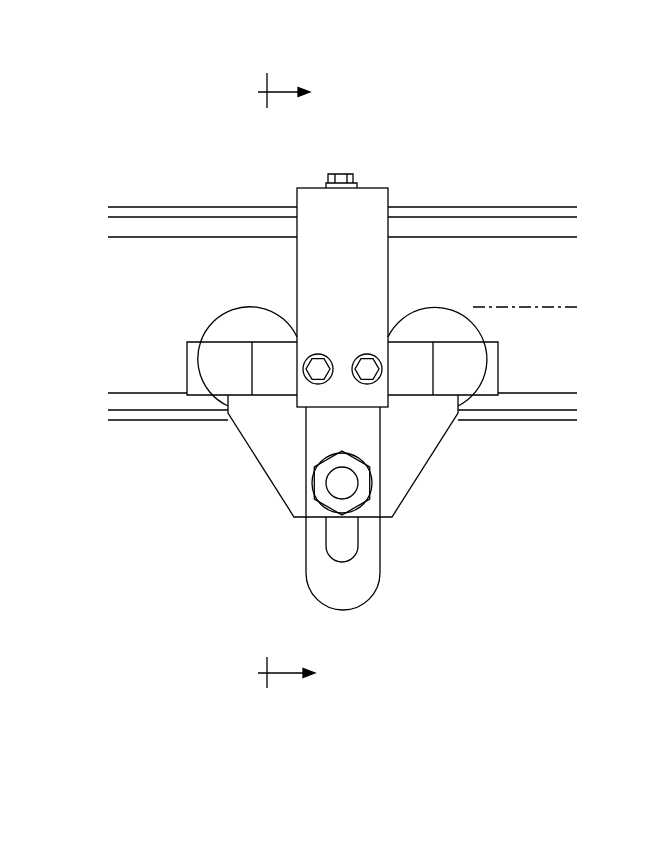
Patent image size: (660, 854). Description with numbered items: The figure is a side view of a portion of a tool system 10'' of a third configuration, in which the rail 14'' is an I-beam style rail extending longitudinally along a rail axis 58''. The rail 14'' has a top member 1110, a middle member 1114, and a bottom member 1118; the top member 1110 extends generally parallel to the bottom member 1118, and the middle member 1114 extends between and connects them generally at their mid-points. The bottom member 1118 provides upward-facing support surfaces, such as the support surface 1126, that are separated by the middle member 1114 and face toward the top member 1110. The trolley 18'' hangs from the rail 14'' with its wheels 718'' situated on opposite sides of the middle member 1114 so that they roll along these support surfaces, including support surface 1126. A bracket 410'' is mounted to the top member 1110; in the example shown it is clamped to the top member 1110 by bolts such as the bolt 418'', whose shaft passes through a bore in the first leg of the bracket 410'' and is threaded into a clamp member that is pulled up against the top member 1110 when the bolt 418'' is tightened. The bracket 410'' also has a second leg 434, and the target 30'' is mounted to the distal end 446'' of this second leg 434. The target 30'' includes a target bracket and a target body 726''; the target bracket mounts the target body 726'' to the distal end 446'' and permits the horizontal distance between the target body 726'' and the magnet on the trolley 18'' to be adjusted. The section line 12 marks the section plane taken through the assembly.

The tool system 10'' is at (350, 409).
The section line 12 is at (276, 376).
The rail 14'' is at (326, 311).
The top member 1110 is at (130, 210).
The middle member 1114 is at (212, 255).
The bottom member 1118 is at (148, 417).
The support surface 1126 is at (148, 400).
The bracket 410'' is at (387, 353).
The bolt 418'' is at (367, 142).
The second leg 434 is at (380, 282).
The wheels 718'' is at (335, 330).
The target body 726'' is at (405, 360).
The target 30'' is at (375, 484).
The distal end 446'' is at (277, 462).
The trolley 18'' is at (284, 563).
The rail axis 58'' is at (550, 278).